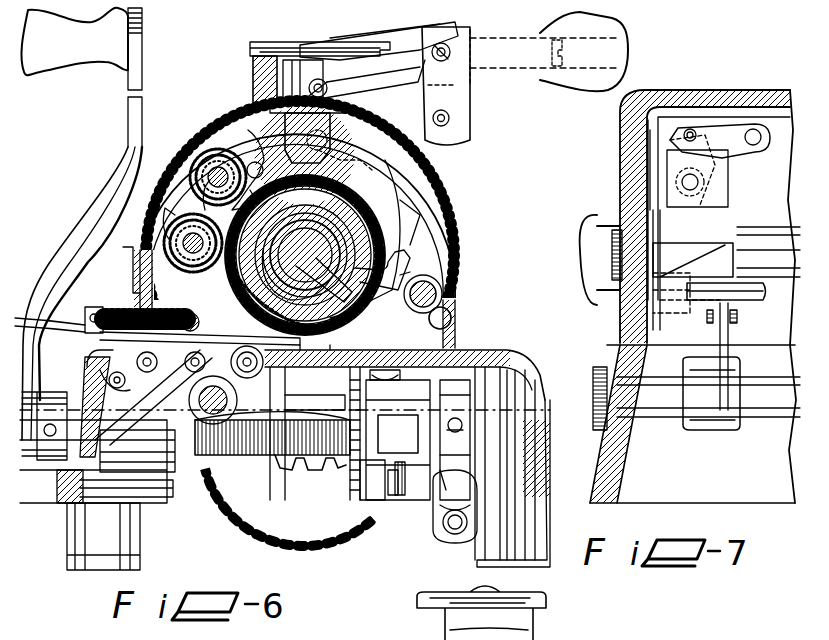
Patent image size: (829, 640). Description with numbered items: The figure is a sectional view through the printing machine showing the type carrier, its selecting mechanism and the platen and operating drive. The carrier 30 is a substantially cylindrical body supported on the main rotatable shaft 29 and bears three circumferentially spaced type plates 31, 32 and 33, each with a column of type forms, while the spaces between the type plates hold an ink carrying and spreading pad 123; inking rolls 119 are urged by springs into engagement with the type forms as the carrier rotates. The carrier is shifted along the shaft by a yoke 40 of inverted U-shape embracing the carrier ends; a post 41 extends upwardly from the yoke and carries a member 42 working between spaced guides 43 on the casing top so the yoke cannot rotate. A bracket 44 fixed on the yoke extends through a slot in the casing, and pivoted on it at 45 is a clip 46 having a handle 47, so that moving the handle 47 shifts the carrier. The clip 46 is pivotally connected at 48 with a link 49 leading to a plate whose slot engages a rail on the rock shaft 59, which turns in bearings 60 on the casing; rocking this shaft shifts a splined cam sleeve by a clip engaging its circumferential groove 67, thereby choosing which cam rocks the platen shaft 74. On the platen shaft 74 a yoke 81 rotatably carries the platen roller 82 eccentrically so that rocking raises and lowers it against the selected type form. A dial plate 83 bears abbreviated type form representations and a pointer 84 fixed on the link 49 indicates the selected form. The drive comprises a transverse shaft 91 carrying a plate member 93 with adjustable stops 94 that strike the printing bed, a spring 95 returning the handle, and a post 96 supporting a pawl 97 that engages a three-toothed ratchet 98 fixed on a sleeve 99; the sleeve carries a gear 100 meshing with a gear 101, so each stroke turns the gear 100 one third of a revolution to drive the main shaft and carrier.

In FIG. 6, the main rotatable shaft 29 is at (305, 220).
In FIG. 6, the carrier 30 is at (250, 276).
In FIG. 6, the type plate 31 is at (265, 160).
In FIG. 6, the type plate 32 is at (396, 215).
In FIG. 6, the type plate 33 is at (405, 262).
In FIG. 6, the yoke 40 is at (285, 125).
In FIG. 6, the post 41 is at (253, 96).
In FIG. 6, the member 42 is at (272, 78).
In FIG. 6, the guides 43 is at (272, 62).
In FIG. 6, the bracket 44 is at (412, 95).
In FIG. 6, the pivot 45 is at (450, 121).
In FIG. 6, the clip 46 is at (458, 95).
In FIG. 6, the handle 47 is at (590, 30).
In FIG. 6, the pivot 48 is at (358, 92).
In FIG. 6, the link 49 is at (434, 52).
In FIG. 6, the rock shaft 59 is at (436, 290).
In FIG. 7, the rock shaft 59 is at (766, 296).
In FIG. 6, the bearings 60 is at (470, 220).
In FIG. 7, the circumferential groove 67 is at (645, 195).
In FIG. 6, the platen shaft 74 is at (200, 400).
In FIG. 6, the yoke 81 is at (245, 456).
In FIG. 6, the platen roller 82 is at (335, 357).
In FIG. 6, the dial plate 83 is at (300, 42).
In FIG. 6, the pointer 84 is at (380, 32).
In FIG. 6, the shaft 91 is at (205, 455).
In FIG. 6, the plate member 93 is at (436, 478).
In FIG. 6, the stops 94 is at (456, 530).
In FIG. 6, the spring 95 is at (272, 460).
In FIG. 6, the post 96 is at (395, 485).
In FIG. 6, the pawl 97 is at (425, 490).
In FIG. 6, the ratchet 98 is at (422, 424).
In FIG. 6, the sleeve 99 is at (365, 475).
In FIG. 6, the gear 100 is at (355, 522).
In FIG. 6, the gear 101 is at (312, 472).
In FIG. 6, the inking rolls 119 is at (160, 215).
In FIG. 6, the ink carrying and spreading pad 123 is at (262, 306).